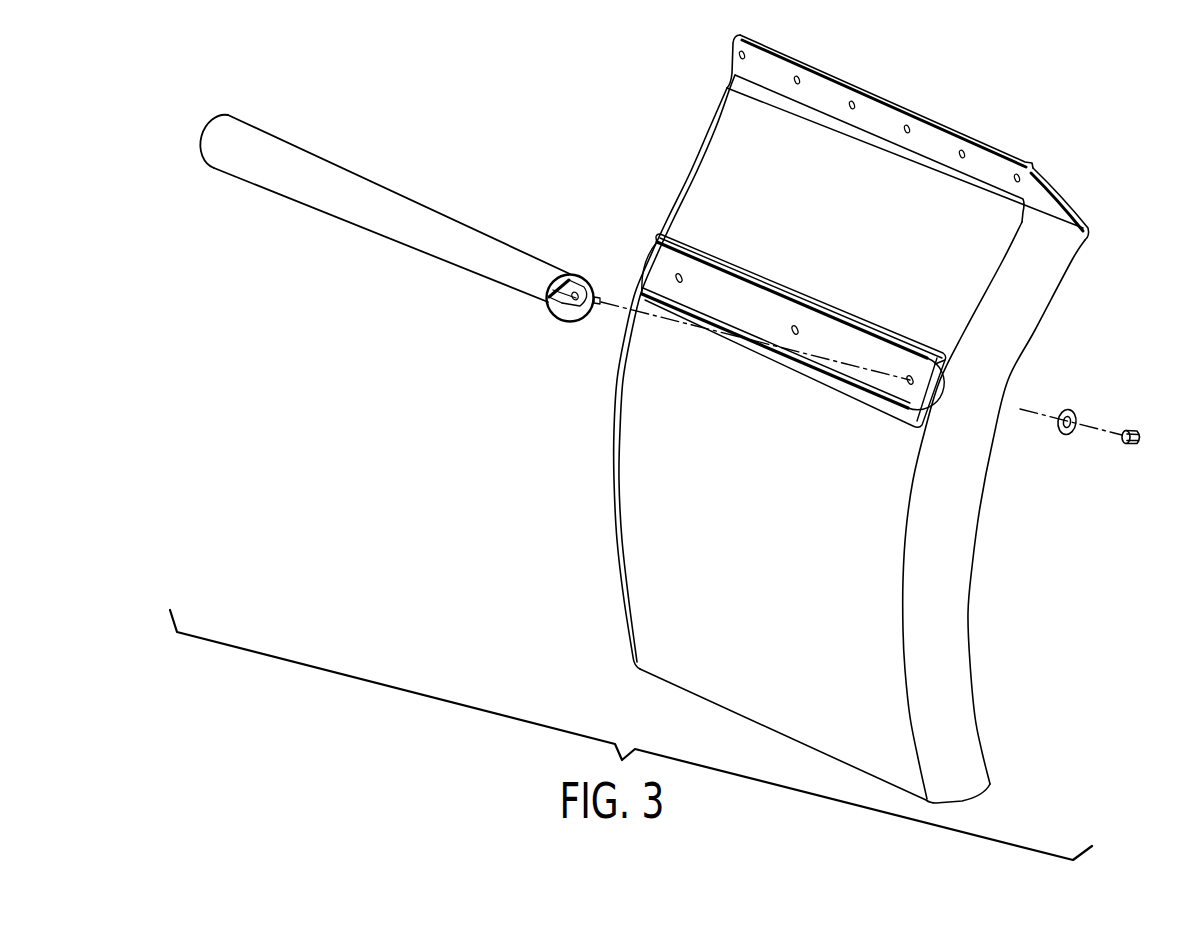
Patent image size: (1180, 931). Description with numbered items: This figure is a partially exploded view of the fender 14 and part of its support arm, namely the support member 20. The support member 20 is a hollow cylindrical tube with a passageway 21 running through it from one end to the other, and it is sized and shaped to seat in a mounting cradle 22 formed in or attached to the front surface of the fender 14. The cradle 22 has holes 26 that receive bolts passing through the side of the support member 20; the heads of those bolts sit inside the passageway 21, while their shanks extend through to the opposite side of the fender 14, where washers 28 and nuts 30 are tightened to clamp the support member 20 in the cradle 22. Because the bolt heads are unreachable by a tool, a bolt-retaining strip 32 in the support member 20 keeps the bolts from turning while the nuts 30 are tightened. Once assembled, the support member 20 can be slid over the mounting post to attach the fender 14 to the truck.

The fender 14 is at (657, 607).
The support member 20 is at (325, 200).
The passageway 21 is at (560, 312).
The mounting cradle 22 is at (925, 388).
The holes 26 is at (684, 280).
The washers 28 is at (1072, 435).
The nuts 30 is at (1142, 443).
The bolt-retaining strip 32 is at (568, 285).